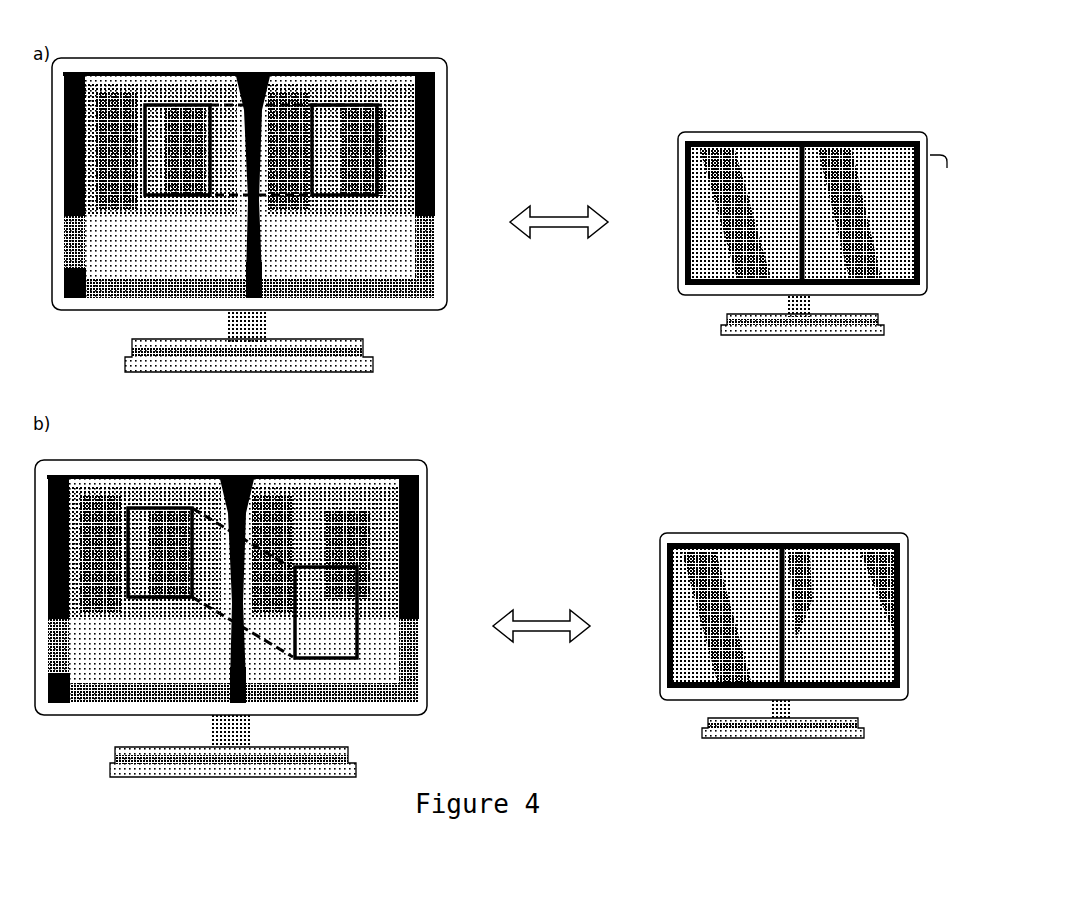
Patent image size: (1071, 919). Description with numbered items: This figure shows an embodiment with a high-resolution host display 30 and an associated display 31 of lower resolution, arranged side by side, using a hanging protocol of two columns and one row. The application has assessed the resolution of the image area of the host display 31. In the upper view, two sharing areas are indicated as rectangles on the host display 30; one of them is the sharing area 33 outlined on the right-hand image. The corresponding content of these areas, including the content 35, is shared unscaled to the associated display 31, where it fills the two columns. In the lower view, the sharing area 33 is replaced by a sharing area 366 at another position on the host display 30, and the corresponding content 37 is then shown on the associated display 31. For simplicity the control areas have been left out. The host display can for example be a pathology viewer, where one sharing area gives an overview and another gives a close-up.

The high-resolution display 30 is at (261, 402).
The associated display 31 is at (803, 418).
The sharing area 33 is at (338, 123).
The corresponding content 35 is at (842, 153).
The corresponding content 37 is at (812, 558).
The relocated region of interest on second image 366 is at (347, 640).